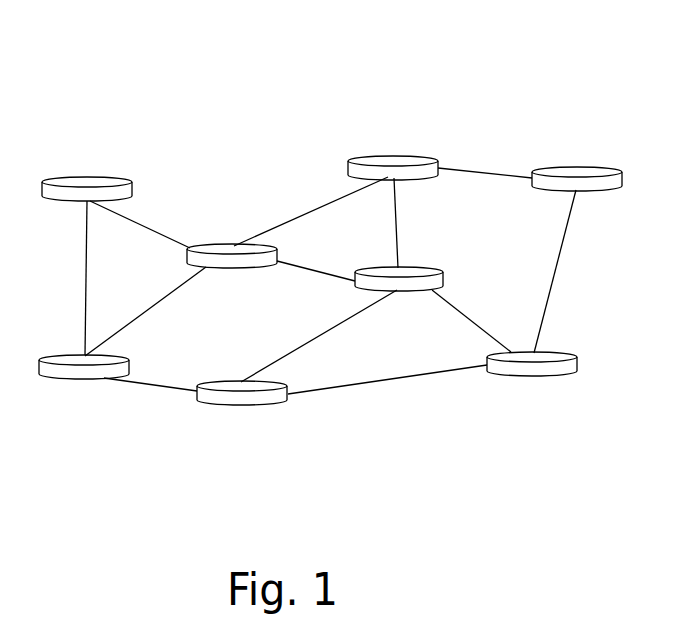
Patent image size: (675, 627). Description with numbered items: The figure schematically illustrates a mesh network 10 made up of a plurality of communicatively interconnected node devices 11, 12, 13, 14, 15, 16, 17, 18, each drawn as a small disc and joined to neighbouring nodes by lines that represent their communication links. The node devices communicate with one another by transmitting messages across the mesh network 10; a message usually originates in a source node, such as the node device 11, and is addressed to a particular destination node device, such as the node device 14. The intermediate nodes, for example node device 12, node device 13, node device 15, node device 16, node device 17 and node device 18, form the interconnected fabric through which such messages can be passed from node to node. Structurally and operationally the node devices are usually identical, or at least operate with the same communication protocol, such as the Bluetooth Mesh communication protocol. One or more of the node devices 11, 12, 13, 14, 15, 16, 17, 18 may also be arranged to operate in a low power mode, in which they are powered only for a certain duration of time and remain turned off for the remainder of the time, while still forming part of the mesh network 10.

The mesh network 10 is at (193, 71).
The node device 11 is at (110, 181).
The node device 12 is at (72, 373).
The node device 13 is at (253, 262).
The node device 14 is at (250, 397).
The node device 15 is at (363, 278).
The node device 16 is at (402, 158).
The node device 17 is at (562, 170).
The node device 18 is at (525, 370).